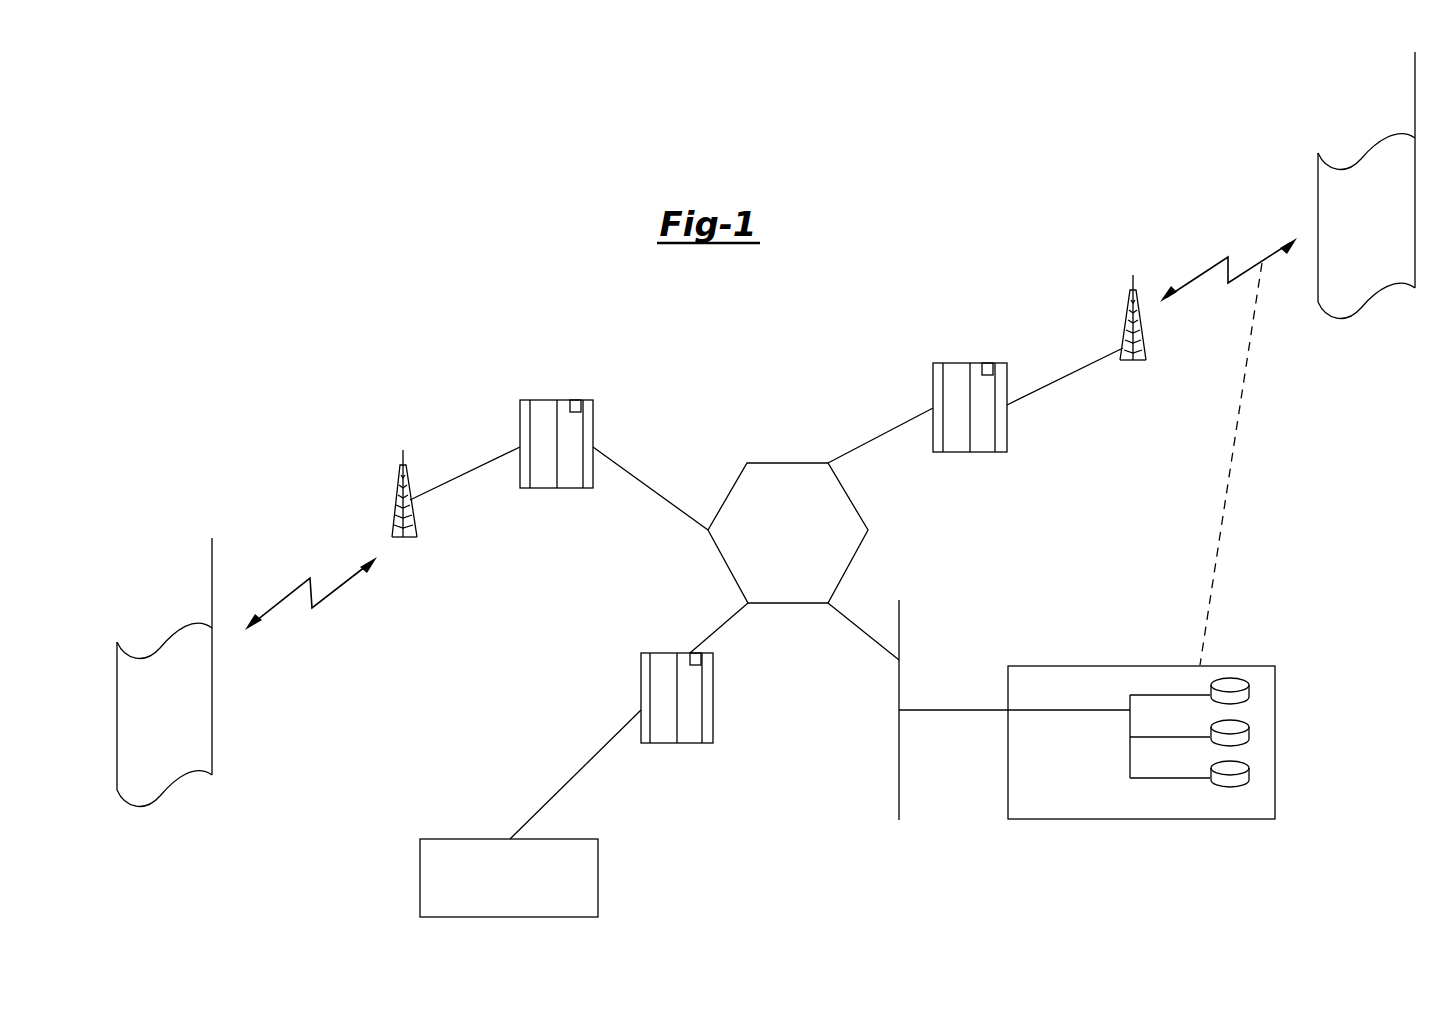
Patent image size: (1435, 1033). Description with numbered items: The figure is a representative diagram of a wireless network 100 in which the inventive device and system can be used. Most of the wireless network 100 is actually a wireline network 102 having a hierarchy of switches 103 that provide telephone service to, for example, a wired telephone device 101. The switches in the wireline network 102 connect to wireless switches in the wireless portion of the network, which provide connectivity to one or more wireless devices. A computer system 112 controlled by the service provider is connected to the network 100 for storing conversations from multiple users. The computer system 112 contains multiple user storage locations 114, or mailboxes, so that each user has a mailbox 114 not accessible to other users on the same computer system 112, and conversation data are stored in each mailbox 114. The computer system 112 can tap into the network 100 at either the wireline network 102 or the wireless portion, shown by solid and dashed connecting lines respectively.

The wireless network 100 is at (633, 344).
The wired telephone device 101 is at (598, 878).
The wireline network 102 is at (812, 540).
The switches 103 is at (641, 672).
The computer system 112 is at (1062, 666).
The user storage locations 114 is at (1233, 697).